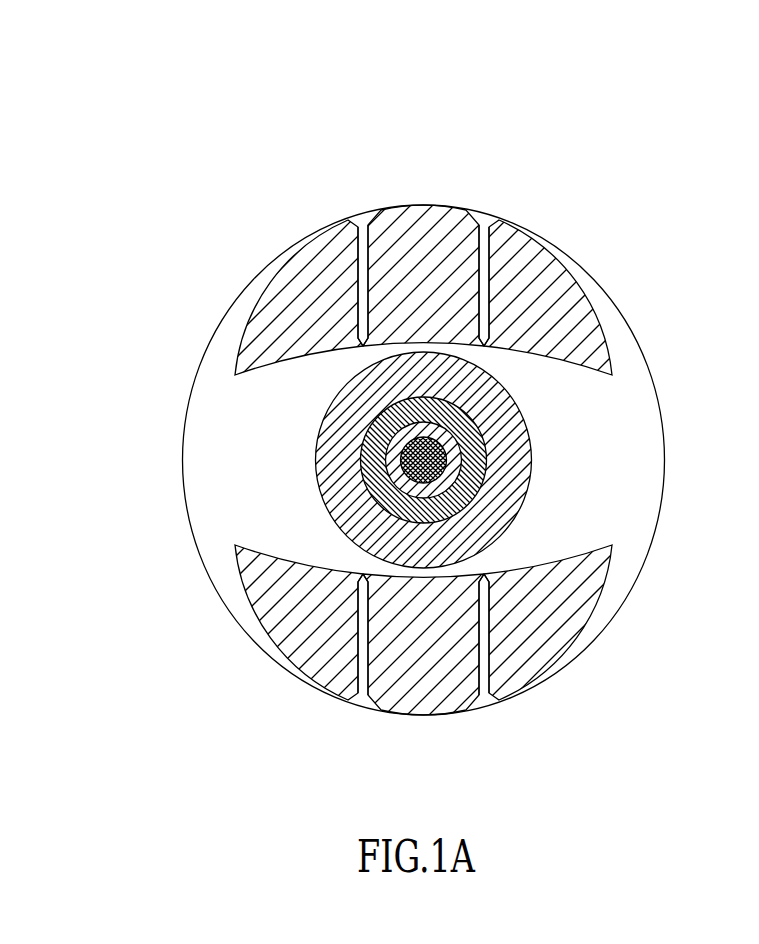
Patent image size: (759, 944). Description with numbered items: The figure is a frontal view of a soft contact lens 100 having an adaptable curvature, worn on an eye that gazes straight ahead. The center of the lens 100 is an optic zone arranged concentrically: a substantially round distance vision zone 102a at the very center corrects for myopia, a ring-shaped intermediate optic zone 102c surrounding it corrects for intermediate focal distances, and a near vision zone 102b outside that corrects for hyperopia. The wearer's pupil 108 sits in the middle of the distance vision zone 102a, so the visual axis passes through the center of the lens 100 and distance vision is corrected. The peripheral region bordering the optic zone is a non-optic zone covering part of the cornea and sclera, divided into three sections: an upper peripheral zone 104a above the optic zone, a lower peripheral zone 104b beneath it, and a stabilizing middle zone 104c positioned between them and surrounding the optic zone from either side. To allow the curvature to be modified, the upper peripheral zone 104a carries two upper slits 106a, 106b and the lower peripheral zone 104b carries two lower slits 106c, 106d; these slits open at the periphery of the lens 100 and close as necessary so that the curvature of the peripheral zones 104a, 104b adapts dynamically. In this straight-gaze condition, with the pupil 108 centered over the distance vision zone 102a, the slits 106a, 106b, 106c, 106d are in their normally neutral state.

The soft contact lens 100 is at (213, 110).
The distance vision zone 102a is at (463, 413).
The near vision zone 102b is at (515, 502).
The intermediate optic zone 102c is at (458, 465).
The upper peripheral zone 104a is at (290, 322).
The lower peripheral zone 104b is at (265, 595).
The stabilizing middle zone 104c is at (205, 421).
The upper slit 106a is at (362, 218).
The upper slit 106b is at (485, 218).
The lower slit 106c is at (362, 703).
The lower slit 106d is at (485, 703).
The pupil 108 is at (436, 453).